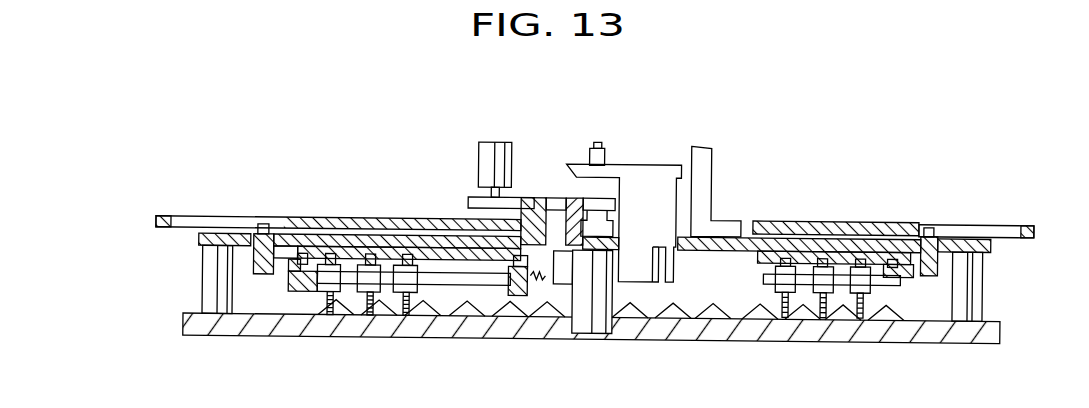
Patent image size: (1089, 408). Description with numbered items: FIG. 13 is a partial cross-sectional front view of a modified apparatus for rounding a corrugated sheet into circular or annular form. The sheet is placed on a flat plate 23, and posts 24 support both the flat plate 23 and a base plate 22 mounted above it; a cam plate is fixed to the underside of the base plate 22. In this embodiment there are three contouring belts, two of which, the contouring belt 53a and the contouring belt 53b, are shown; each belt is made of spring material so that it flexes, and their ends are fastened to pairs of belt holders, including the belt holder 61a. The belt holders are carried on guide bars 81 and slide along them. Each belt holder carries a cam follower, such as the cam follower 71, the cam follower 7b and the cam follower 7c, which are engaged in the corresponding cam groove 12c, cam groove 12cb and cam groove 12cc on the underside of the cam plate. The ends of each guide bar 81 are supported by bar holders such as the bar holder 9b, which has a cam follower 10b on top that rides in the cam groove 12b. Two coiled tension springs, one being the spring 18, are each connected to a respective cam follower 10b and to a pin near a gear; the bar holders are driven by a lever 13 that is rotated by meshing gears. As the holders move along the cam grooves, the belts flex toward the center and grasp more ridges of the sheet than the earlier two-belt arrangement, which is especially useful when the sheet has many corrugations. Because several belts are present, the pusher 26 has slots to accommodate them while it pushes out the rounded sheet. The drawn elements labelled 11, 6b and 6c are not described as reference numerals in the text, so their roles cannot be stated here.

The lever 13 is at (165, 220).
The frame block 11 is at (290, 239).
The cam follower 71 is at (317, 242).
The cam follower 7b is at (357, 238).
The cam follower 7c is at (403, 245).
The cam groove 12c is at (330, 252).
The cam groove 12cb is at (368, 251).
The cam groove 12cc is at (407, 250).
The cam groove 12b is at (518, 249).
The cam follower 10b is at (532, 271).
The coiled tension spring 18 is at (550, 241).
The pusher 26 is at (648, 187).
The base plate 22 is at (953, 237).
The post 24 is at (205, 268).
The flat plate 23 is at (983, 319).
The belt holder 61a is at (307, 289).
The contouring belt 53a is at (323, 289).
The bolt 6b is at (349, 289).
The bolt 6c is at (390, 289).
The contouring belt 53b is at (368, 312).
The guide bar 81 is at (431, 282).
The bar holder 9b is at (512, 262).